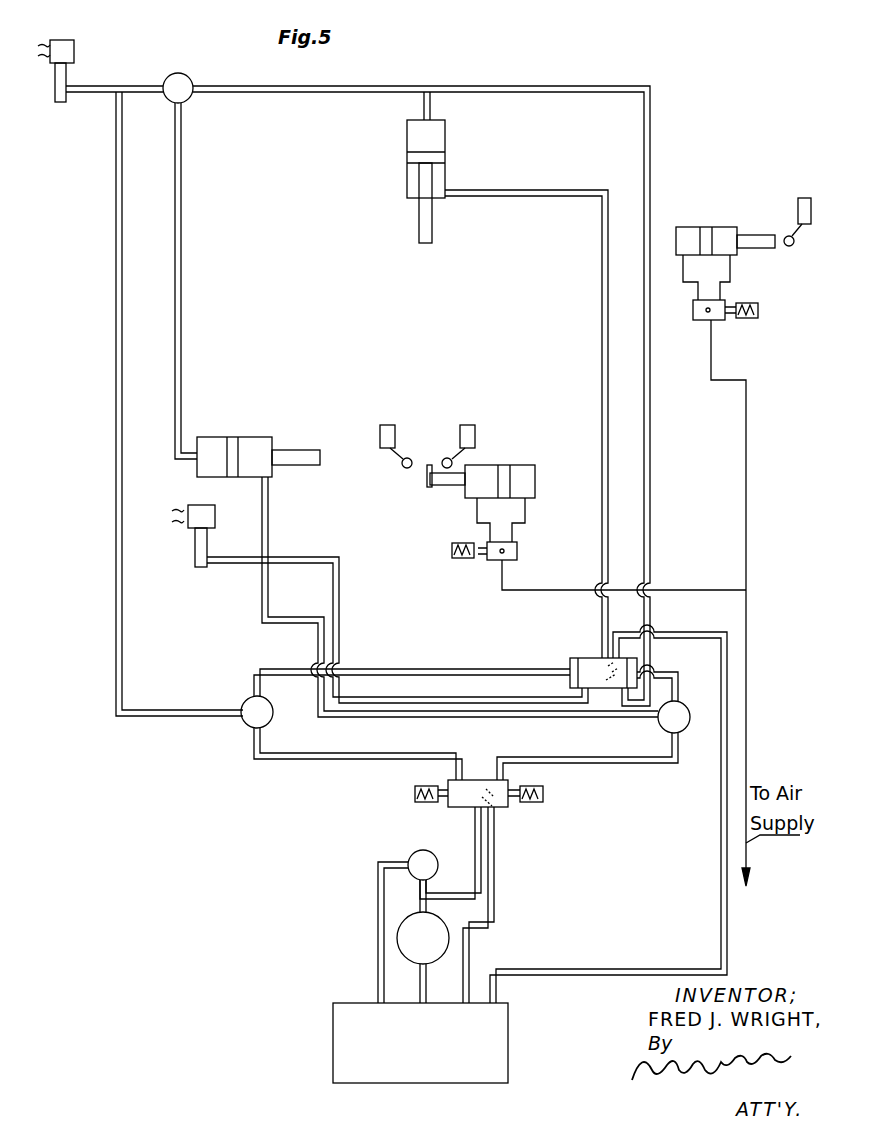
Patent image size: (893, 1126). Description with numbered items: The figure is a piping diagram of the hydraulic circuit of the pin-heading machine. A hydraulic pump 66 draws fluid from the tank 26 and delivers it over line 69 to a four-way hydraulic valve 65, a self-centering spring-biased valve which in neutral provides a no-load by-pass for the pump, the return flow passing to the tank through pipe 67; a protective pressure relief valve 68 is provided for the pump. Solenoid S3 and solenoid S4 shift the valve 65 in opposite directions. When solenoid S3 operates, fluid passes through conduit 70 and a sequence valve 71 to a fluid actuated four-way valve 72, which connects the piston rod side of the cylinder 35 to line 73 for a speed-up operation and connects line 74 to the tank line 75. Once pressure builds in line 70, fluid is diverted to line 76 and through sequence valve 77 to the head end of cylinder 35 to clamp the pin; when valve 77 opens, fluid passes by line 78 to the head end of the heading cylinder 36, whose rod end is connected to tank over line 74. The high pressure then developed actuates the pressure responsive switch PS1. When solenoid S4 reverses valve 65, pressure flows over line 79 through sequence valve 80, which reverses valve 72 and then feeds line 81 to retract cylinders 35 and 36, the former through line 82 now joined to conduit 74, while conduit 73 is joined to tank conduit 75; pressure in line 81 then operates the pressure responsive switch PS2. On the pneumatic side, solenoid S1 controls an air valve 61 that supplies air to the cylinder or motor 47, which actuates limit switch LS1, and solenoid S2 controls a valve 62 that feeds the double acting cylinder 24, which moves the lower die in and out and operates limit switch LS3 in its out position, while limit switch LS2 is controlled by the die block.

The pressure responsive switch PS1 is at (60, 59).
The conduit, pipe or line 73 is at (303, 94).
The sequence valve 77 is at (191, 80).
The pipe, conduit or line 76 is at (117, 224).
The pipe, conduit or line 78 is at (184, 309).
The cylinder 35 is at (442, 146).
The pipe, conduit or line 82 is at (603, 340).
The cylinder or motor 47 is at (691, 229).
The limit switch LS1 is at (784, 220).
The air valve 61 is at (699, 321).
The solenoid S1 is at (748, 322).
The heading cylinder 36 is at (213, 441).
The pipe, conduit or line 81 is at (432, 719).
The pressure responsive switch PS2 is at (196, 523).
The hydraulic pipe, conduit or line 74 is at (341, 608).
The limit switch LS2 is at (377, 446).
The limit switch LS3 is at (477, 446).
The hydraulic cylinder or motor 24 is at (513, 470).
The valve 62 is at (512, 553).
The solenoid S2 is at (464, 563).
The fluid actuated four-way valve 72 is at (609, 689).
The conduit or pipe 70 is at (416, 669).
The sequence valve 71 is at (270, 713).
The pipe, conduit or line 79 is at (665, 676).
The sequence valve 80 is at (683, 707).
The tank conduit, pipe or line 75 is at (722, 782).
The four-way hydraulic valve 65 is at (488, 778).
The solenoid S3 is at (425, 807).
The solenoid S4 is at (530, 807).
The conduit, pipe or line 69 is at (476, 851).
The pipe or conduit 67 is at (494, 862).
The pressure relief valve 68 is at (413, 852).
The hydraulic pump 66 is at (432, 957).
The tank 26 is at (366, 1006).